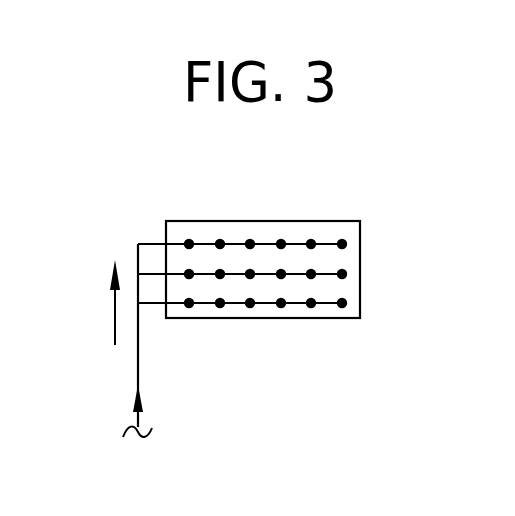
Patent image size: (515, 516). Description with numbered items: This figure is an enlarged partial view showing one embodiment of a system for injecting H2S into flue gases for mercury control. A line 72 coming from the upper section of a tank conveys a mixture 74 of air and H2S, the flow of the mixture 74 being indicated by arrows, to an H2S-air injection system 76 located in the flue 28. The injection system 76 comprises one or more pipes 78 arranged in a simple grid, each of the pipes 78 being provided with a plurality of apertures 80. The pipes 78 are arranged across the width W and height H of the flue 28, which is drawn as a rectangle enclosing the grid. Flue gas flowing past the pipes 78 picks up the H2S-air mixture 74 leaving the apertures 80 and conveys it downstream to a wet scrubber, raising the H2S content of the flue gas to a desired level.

The flue 28 is at (268, 221).
The line 72 is at (128, 360).
The mixture of air and H2S 74 is at (116, 311).
The H2S-air injection system 76 is at (364, 190).
The pipes 78 is at (138, 244).
The apertures 80 is at (281, 305).